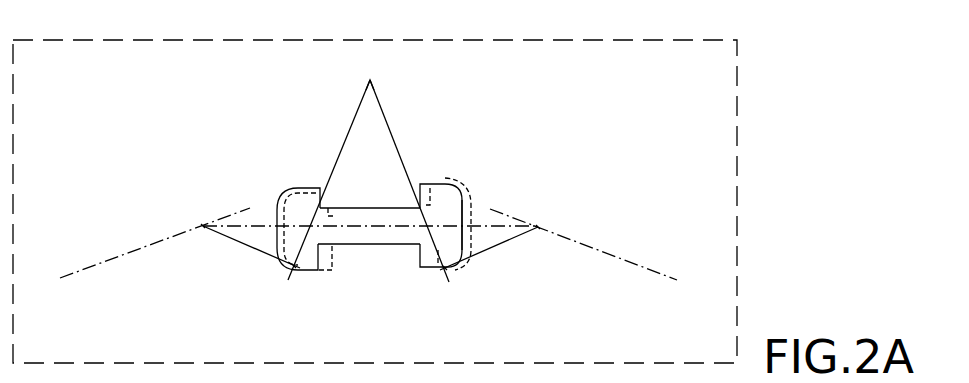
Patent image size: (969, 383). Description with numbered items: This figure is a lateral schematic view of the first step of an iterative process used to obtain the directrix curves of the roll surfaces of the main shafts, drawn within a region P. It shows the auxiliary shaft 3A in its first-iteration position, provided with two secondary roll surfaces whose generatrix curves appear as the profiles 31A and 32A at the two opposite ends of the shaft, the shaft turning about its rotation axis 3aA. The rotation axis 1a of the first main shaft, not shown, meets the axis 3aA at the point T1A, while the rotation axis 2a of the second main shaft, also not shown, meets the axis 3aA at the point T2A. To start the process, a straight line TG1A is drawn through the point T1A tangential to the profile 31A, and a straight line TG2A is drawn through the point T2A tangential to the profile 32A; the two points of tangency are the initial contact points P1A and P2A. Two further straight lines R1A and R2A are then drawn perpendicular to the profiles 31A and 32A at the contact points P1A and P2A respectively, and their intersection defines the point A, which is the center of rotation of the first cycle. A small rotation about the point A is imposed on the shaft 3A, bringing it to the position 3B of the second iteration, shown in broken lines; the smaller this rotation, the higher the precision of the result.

The plane / projection region P is at (572, 62).
The point of intersection A is at (373, 79).
The straight line R1A is at (345, 137).
The straight line R2A is at (388, 122).
The rotation axis 1a is at (141, 250).
The rotation axis 2a is at (610, 250).
The point of intersection T1A is at (201, 224).
The point of intersection T2A is at (541, 223).
The straight line TG1A is at (243, 255).
The straight line TG2A is at (512, 245).
The initial contact point P1A is at (293, 272).
The initial contact point P2A is at (446, 273).
The profile 31A is at (292, 185).
The profile 32A is at (443, 183).
The auxiliary shaft 3A is at (462, 210).
The auxiliary shaft 3B is at (478, 215).
The rotation axis 3aA is at (372, 232).